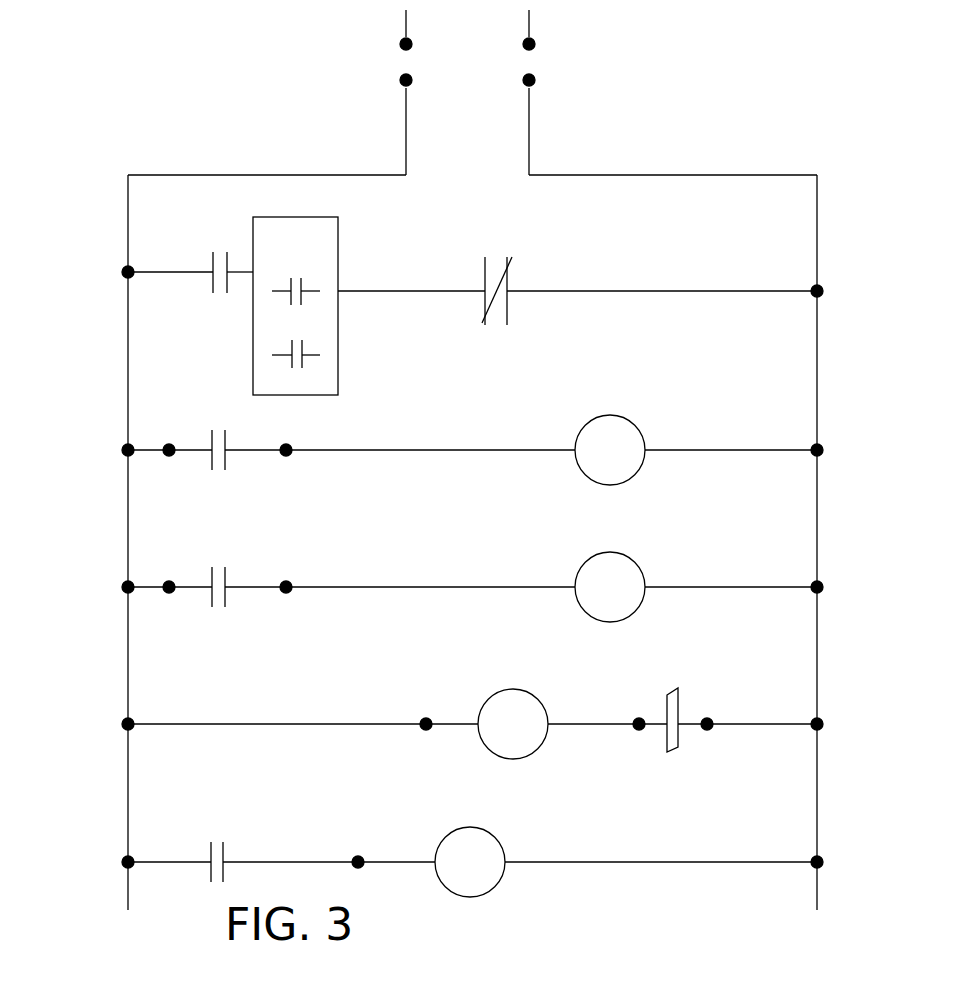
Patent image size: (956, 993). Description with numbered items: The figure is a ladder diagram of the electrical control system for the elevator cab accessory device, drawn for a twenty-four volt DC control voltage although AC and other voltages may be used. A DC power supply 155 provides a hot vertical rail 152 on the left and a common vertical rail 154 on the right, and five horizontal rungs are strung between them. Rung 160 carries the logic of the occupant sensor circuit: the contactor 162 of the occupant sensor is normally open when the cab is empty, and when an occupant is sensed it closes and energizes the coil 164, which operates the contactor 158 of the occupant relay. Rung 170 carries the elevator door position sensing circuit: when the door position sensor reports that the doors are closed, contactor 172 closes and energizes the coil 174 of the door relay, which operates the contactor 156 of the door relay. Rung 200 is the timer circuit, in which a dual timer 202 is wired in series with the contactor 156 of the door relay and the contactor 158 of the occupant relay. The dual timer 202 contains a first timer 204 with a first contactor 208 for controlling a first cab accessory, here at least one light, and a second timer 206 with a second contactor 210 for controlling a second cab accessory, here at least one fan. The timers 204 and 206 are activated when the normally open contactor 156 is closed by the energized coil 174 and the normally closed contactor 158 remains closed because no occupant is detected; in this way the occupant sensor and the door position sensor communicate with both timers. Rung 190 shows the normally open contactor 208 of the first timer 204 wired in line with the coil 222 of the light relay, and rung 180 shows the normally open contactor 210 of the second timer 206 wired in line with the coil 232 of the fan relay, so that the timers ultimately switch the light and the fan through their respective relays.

The hot vertical rail 152 is at (128, 210).
The common vertical rail 154 is at (817, 218).
The DC power supply 155 is at (491, 136).
The contactor of door relay 156 is at (212, 286).
The contactor of occupant relay 158 is at (507, 284).
The rung 160 is at (148, 862).
The contactor 162 is at (227, 852).
The coil 164 is at (490, 836).
The rung 170 is at (148, 724).
The contactor 172 is at (670, 752).
The coil 174 is at (530, 694).
The rung 180 is at (147, 587).
The rung 190 is at (147, 450).
The rung 200 is at (168, 272).
The dual timer 202 is at (400, 250).
The first timer 204 is at (318, 247).
The second timer 206 is at (323, 365).
The first contactor 208 is at (287, 300).
The second contactor 210 is at (288, 365).
The coil of light relay 222 is at (625, 421).
The coil of fan relay 232 is at (625, 557).